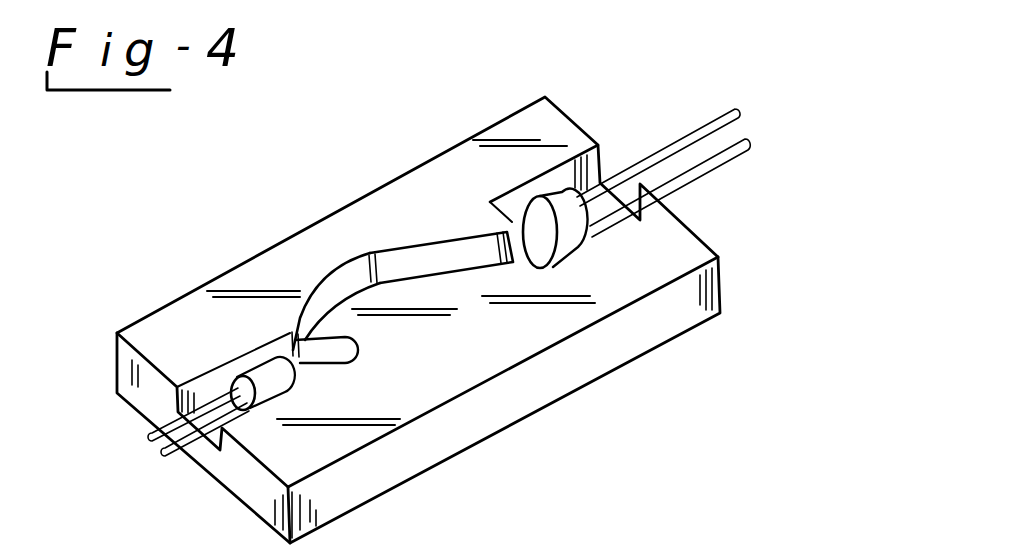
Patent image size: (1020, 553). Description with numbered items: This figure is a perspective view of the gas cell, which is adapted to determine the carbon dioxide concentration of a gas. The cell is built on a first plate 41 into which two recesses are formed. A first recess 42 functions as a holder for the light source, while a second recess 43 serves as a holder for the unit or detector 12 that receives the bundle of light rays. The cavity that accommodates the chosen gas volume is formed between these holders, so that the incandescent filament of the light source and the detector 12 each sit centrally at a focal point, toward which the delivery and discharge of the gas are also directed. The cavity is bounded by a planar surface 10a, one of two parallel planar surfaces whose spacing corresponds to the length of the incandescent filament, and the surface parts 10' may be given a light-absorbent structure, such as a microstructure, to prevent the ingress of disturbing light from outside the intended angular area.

The surface parts 10' is at (441, 190).
The planar surface 10a is at (382, 302).
The detector 12 is at (567, 242).
The first plate 41 is at (685, 250).
The first recess 42 is at (212, 387).
The second recess 43 is at (587, 170).